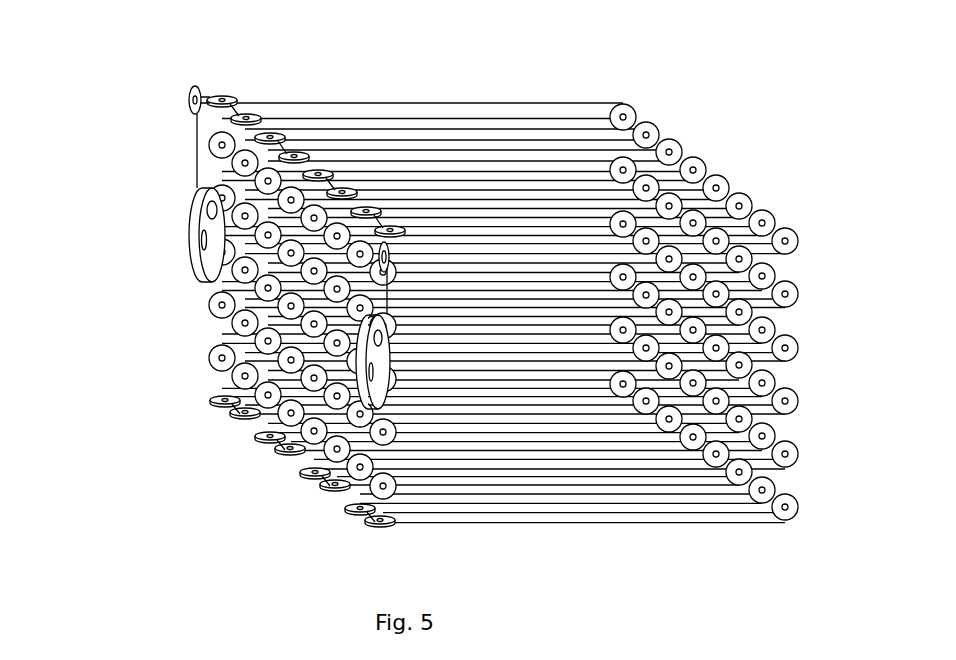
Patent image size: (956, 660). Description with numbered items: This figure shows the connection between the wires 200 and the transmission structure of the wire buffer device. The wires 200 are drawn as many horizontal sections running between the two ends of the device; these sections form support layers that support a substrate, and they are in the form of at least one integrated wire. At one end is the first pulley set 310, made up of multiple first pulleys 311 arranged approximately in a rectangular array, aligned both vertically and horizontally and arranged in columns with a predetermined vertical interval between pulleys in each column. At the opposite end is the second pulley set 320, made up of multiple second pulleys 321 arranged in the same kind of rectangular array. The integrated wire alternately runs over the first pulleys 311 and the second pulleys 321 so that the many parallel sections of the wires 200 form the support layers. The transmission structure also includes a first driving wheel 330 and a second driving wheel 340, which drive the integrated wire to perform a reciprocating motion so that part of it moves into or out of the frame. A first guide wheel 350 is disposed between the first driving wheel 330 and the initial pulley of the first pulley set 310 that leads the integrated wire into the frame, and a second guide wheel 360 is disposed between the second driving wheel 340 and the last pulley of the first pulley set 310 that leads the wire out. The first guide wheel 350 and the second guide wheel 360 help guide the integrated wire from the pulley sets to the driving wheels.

The wires 200 is at (515, 102).
The first pulley set 310 is at (180, 306).
The first pulley 311 is at (215, 366).
The second pulley set 320 is at (713, 145).
The second pulley 321 is at (798, 243).
The first driving wheel 330 is at (378, 388).
The second driving wheel 340 is at (197, 243).
The first guide wheel 350 is at (384, 240).
The second guide wheel 360 is at (200, 90).